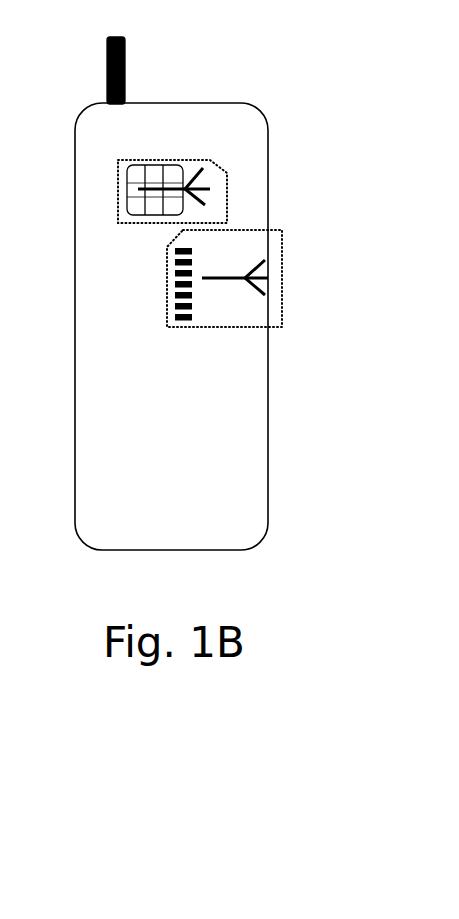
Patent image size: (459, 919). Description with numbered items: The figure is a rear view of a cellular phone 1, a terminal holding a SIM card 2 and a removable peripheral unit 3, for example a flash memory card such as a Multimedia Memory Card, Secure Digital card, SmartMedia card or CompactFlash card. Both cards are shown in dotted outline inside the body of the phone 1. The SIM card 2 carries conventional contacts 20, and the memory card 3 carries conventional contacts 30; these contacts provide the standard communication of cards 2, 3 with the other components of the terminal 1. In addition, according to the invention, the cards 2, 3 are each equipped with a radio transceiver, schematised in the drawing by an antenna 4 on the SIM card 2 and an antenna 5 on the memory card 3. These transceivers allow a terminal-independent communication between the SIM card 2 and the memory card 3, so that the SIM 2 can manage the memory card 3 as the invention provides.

The cellular phone 1 is at (238, 118).
The SIM card 2 is at (227, 202).
The removable peripheral unit 3 is at (283, 278).
The antenna 4 is at (210, 186).
The antenna 5 is at (228, 278).
The conventional contacts 20 is at (140, 171).
The conventional contacts 30 is at (173, 325).